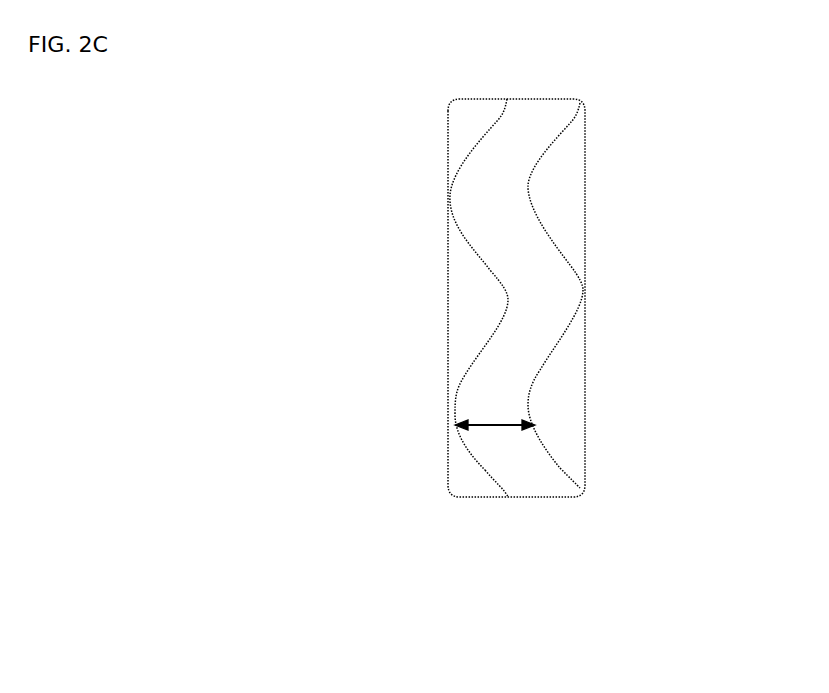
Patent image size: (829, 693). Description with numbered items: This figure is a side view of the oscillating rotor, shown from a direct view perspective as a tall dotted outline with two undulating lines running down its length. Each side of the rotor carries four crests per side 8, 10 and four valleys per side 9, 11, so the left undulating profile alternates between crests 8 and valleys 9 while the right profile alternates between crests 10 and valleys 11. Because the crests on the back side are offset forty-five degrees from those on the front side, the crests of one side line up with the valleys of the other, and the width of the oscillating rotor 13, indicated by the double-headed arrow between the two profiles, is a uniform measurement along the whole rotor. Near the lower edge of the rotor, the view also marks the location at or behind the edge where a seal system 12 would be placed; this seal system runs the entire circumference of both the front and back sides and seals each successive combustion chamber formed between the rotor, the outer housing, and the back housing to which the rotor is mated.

The crests (front side) 8 is at (448, 195).
The valleys (front side) 9 is at (502, 108).
The crests (back side) 10 is at (585, 105).
The valleys (back side) 11 is at (532, 195).
The seal system 12 is at (513, 493).
The width of the oscillating rotor 13 is at (493, 425).